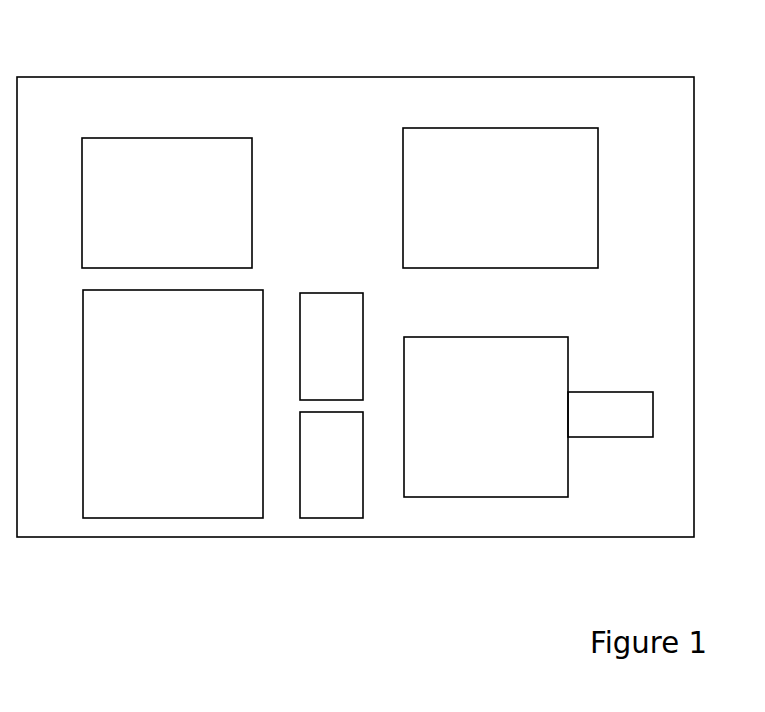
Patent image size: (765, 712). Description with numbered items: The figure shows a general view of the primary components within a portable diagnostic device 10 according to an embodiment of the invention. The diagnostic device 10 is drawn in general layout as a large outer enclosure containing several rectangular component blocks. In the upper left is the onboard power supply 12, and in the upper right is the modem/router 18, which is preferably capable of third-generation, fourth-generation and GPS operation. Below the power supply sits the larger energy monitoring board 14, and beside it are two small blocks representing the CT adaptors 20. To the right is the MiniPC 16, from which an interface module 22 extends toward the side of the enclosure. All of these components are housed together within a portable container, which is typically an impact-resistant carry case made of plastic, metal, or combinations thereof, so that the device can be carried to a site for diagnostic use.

The diagnostic device 10 is at (130, 537).
The onboard power supply 12 is at (137, 163).
The energy monitoring board 14 is at (210, 507).
The MiniPC 16 is at (470, 463).
The modem/router 18 is at (463, 153).
The CT adaptors 20 is at (300, 348).
The interface module 22 is at (633, 415).